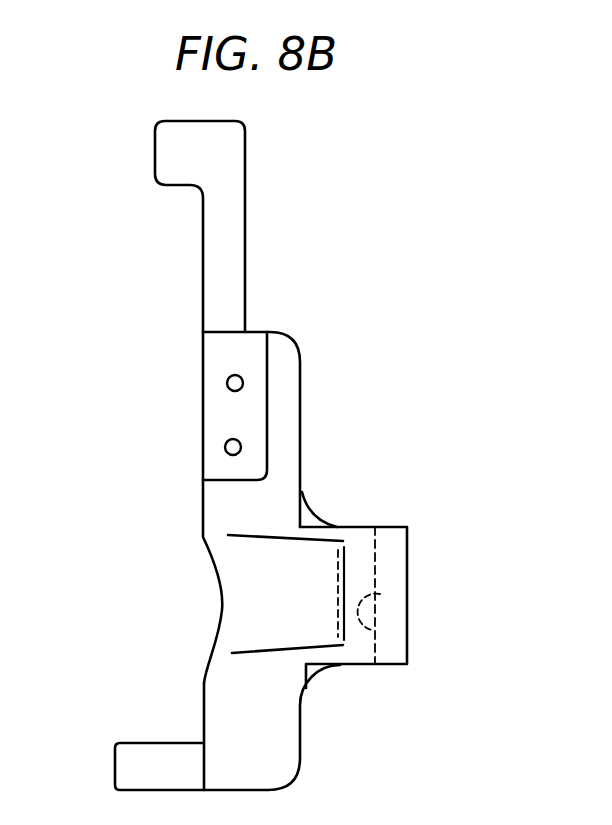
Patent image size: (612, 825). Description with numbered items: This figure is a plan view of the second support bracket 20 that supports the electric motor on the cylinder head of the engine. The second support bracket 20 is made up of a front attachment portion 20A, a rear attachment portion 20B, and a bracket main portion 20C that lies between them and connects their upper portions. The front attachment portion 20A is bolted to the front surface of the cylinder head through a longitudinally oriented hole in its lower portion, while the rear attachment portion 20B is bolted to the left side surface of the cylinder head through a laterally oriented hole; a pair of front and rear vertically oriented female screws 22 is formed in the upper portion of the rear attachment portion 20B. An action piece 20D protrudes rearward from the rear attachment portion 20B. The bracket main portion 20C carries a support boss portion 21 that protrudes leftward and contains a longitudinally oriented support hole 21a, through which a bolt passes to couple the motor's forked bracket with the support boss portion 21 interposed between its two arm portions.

The second support bracket 20 is at (344, 365).
The front attachment portion 20A is at (150, 758).
The rear attachment portion 20B is at (332, 443).
The bracket main portion 20C is at (258, 580).
The action piece 20D is at (237, 168).
The support boss portion 21 is at (407, 631).
The support hole 21a is at (407, 583).
The female screws 22 is at (227, 390).